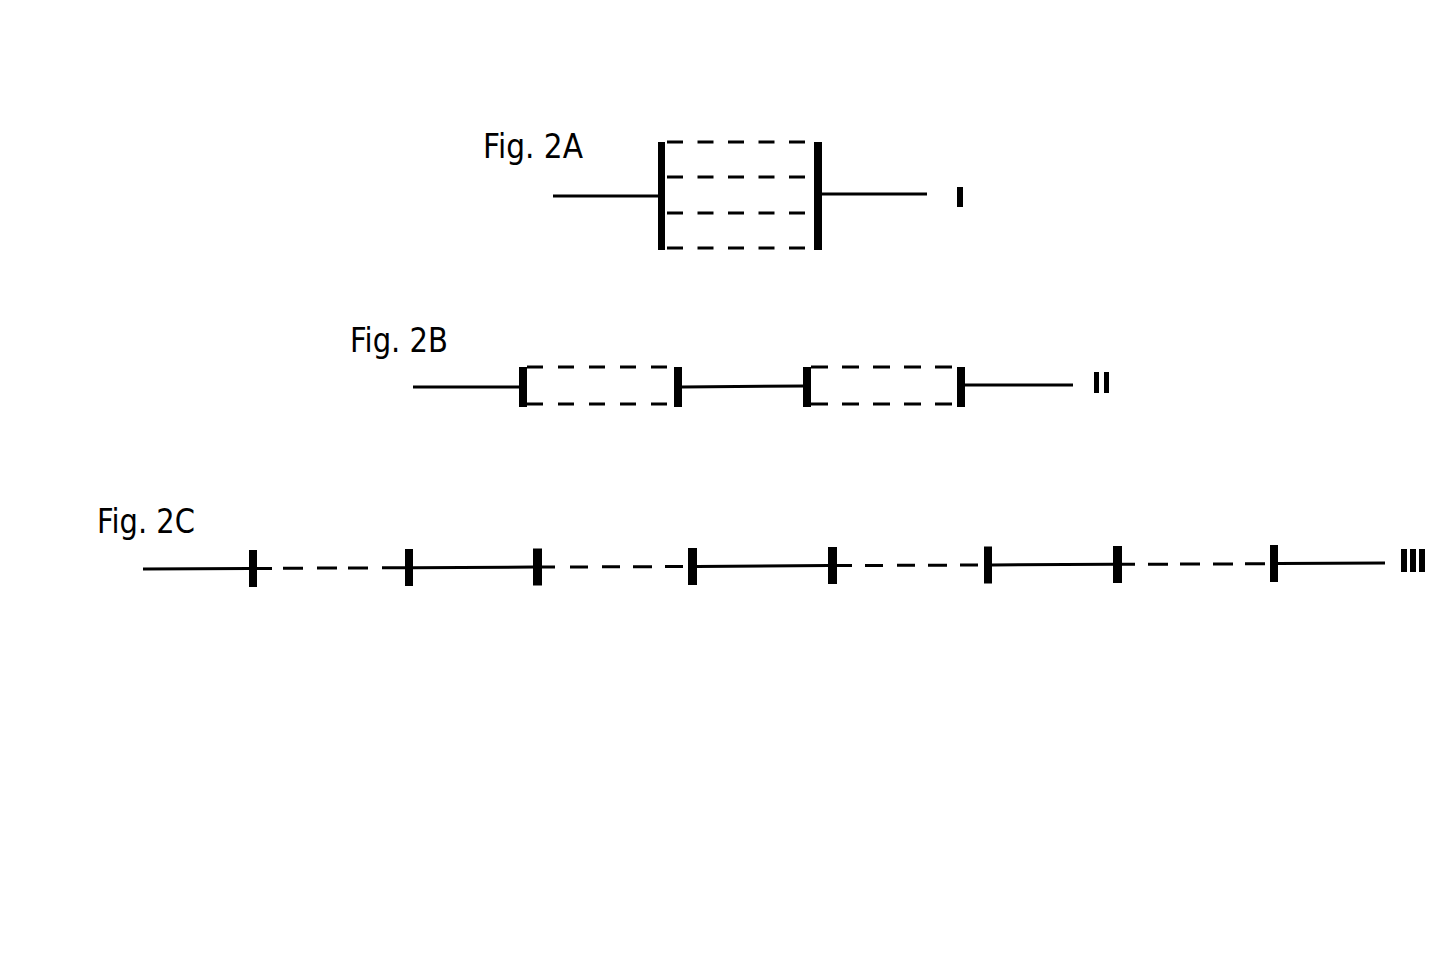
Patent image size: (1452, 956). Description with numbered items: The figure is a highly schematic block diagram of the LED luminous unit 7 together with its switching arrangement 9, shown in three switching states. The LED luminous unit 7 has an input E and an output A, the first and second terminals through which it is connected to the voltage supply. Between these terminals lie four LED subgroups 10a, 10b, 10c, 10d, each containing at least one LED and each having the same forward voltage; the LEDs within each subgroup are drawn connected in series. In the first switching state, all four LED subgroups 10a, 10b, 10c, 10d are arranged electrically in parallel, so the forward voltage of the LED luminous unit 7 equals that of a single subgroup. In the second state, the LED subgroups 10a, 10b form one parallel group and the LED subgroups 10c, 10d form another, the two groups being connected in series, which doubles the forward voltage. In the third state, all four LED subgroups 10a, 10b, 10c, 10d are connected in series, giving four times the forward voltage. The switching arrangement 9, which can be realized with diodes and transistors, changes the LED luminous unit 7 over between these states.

In FIG. 2A, the LED luminous unit 7 is at (786, 157).
In FIG. 2B, the LED luminous unit 7 is at (790, 337).
In FIG. 2C, the LED luminous unit 7 is at (784, 513).
In FIG. 2A, the switching arrangement 9 is at (786, 157).
In FIG. 2B, the switching arrangement 9 is at (790, 337).
In FIG. 2C, the switching arrangement 9 is at (784, 513).
In FIG. 2A, the LED subgroup 10a is at (739, 130).
In FIG. 2B, the LED subgroup 10a is at (599, 355).
In FIG. 2C, the LED subgroup 10a is at (331, 554).
In FIG. 2A, the LED subgroup 10b is at (739, 165).
In FIG. 2B, the LED subgroup 10b is at (599, 391).
In FIG. 2C, the LED subgroup 10b is at (612, 553).
In FIG. 2A, the LED subgroup 10c is at (739, 200).
In FIG. 2B, the LED subgroup 10c is at (883, 354).
In FIG. 2C, the LED subgroup 10c is at (907, 552).
In FIG. 2A, the LED subgroup 10d is at (739, 235).
In FIG. 2B, the LED subgroup 10d is at (883, 390).
In FIG. 2C, the LED subgroup 10d is at (1193, 550).